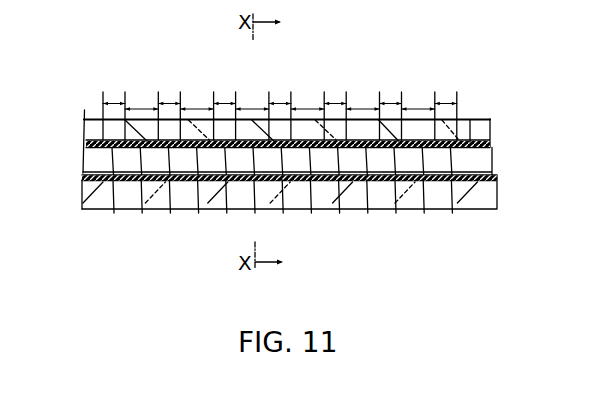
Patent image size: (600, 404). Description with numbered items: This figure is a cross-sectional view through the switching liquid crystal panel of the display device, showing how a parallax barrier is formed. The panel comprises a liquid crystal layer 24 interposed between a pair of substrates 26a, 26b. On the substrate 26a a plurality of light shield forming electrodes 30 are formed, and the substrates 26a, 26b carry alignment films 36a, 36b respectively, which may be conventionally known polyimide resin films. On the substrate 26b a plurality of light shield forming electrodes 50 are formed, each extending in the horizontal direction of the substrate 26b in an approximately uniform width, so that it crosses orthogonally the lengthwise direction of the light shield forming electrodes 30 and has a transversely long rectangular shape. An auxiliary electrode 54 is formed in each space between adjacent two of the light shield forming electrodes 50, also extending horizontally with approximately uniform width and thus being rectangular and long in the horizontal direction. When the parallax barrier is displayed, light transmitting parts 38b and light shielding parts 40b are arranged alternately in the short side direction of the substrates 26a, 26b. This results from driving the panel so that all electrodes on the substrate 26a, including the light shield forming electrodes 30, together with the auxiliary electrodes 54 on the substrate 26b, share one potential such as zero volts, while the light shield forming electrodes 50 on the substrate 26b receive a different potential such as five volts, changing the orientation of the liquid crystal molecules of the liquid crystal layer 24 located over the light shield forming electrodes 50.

The liquid crystal layer 24 is at (490, 163).
The substrate 26a is at (83, 200).
The substrate 26b is at (483, 133).
The light shield forming electrode 30 is at (82, 177).
The alignment film 36a is at (488, 151).
The alignment film 36b is at (83, 167).
The light transmitting part 38b is at (445, 100).
The light shielding part 40b is at (418, 107).
The light shield forming electrode 50 is at (494, 103).
The auxiliary electrode 54 is at (282, 207).